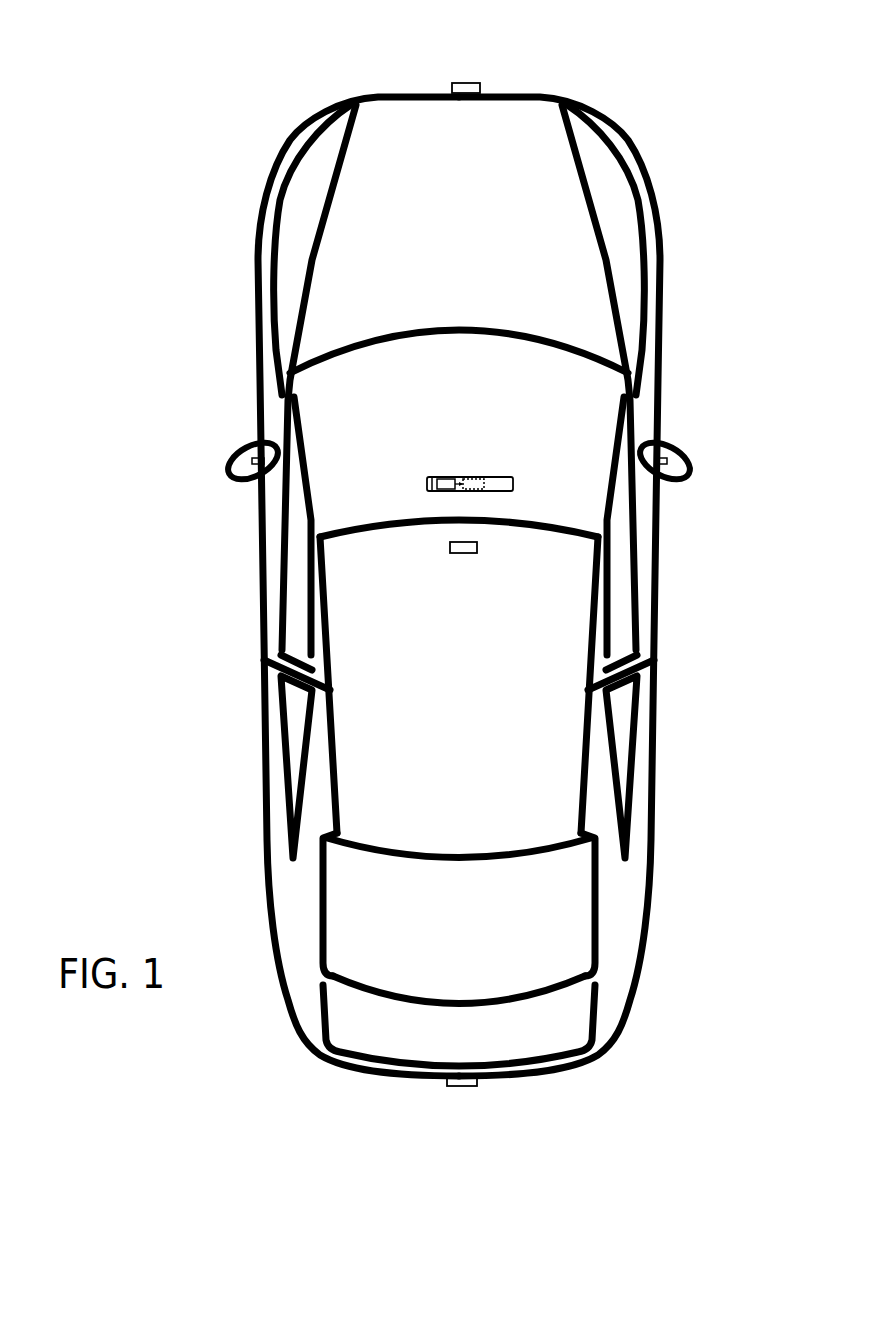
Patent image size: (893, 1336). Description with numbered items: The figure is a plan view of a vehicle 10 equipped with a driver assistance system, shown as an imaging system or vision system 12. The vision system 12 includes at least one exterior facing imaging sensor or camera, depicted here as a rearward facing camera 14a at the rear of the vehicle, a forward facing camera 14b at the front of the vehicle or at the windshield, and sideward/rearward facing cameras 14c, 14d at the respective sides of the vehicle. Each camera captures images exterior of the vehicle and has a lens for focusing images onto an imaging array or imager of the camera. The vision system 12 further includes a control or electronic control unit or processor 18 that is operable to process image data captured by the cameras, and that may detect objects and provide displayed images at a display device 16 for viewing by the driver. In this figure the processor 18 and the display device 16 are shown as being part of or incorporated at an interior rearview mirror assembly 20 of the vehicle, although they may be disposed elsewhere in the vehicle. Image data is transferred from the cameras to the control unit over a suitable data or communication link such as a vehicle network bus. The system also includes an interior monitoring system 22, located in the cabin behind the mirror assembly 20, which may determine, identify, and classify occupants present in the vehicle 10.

The vehicle 10 is at (203, 182).
The vision system 12 is at (404, 1112).
The rearward facing camera 14a is at (463, 1083).
The forward facing camera 14b is at (468, 85).
The sideward/rearward facing camera 14c is at (253, 460).
The sideward/rearward facing camera 14d is at (660, 462).
The display device 16 is at (442, 482).
The electronic control unit 18 is at (465, 477).
The interior rearview mirror assembly 20 is at (513, 477).
The interior monitoring system 22 is at (458, 554).